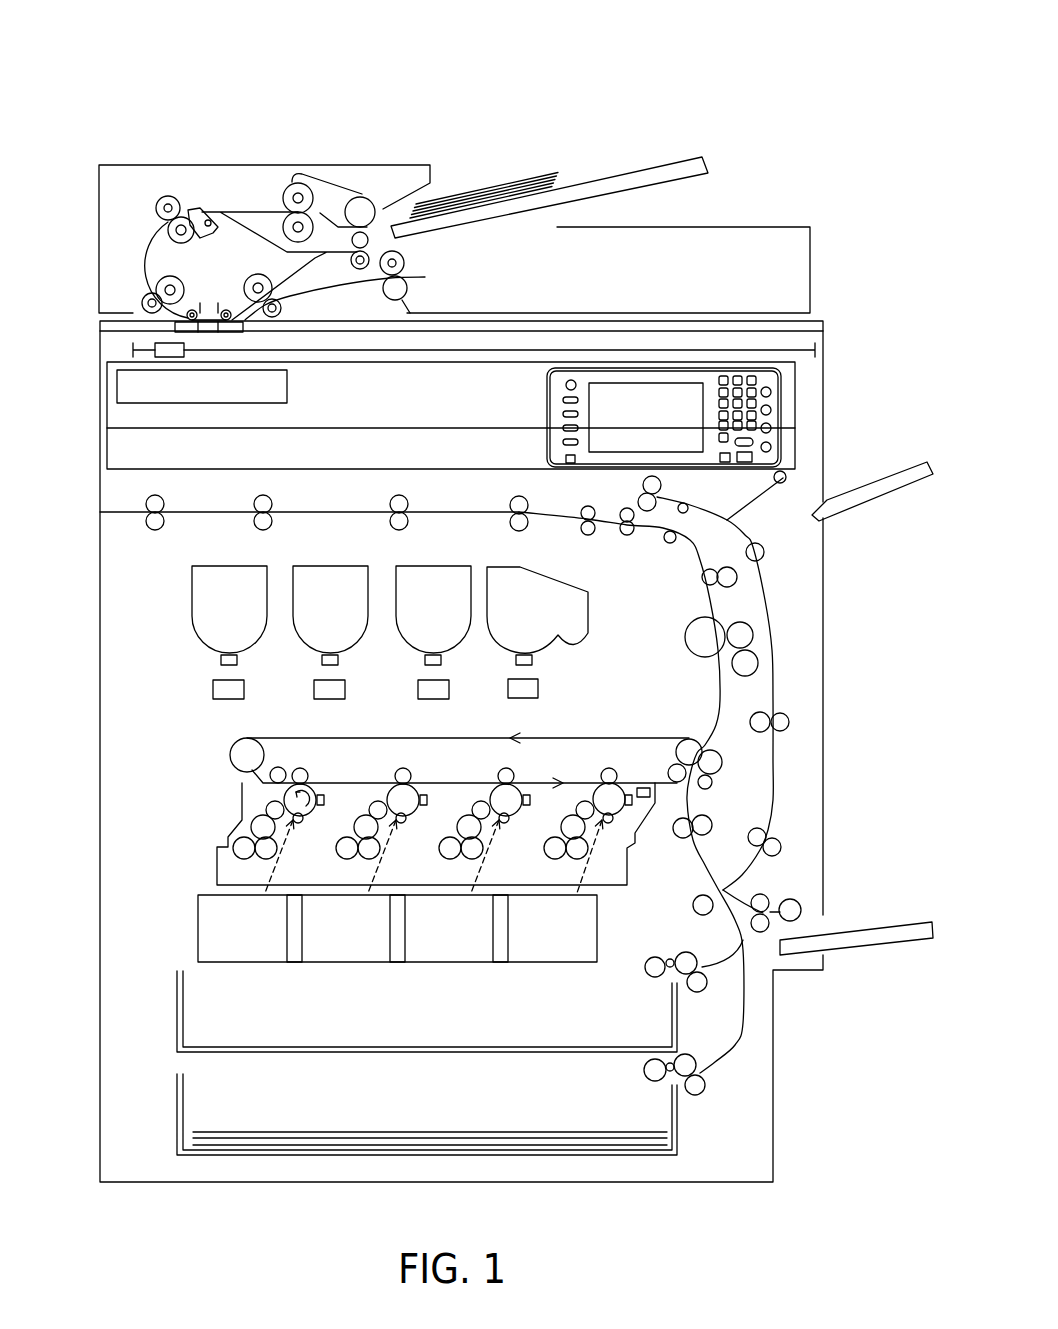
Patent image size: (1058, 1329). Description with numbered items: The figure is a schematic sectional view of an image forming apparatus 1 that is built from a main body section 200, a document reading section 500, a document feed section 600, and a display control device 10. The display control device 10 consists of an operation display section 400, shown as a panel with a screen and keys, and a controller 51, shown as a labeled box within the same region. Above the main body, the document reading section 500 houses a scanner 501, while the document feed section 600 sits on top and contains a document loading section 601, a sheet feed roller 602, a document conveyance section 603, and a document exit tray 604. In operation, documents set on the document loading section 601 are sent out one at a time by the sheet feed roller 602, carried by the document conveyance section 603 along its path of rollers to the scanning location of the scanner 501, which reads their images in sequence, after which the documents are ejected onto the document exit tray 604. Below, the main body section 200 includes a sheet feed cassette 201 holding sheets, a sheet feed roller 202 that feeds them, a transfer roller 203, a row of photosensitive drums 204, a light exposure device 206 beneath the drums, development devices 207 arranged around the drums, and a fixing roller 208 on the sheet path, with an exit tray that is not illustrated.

The image forming apparatus 1 is at (476, 592).
The display control device 10 is at (419, 415).
The controller 51 is at (239, 385).
The main body section 200 is at (476, 751).
The sheet feed cassette 201 is at (360, 1114).
The sheet feed roller 202 is at (741, 1089).
The transfer roller 203 is at (693, 734).
The photosensitive drums 204 is at (321, 777).
The light exposure device 206 is at (397, 966).
The development devices 207 is at (414, 830).
The fixing roller 208 is at (695, 611).
The operation display section 400 is at (724, 417).
The document reading section 500 is at (512, 345).
The scanner 501 is at (426, 338).
The document feed section 600 is at (511, 239).
The document loading section 601 is at (549, 173).
The sheet feed roller 602 is at (338, 168).
The document conveyance section 603 is at (232, 257).
The document exit tray 604 is at (608, 270).